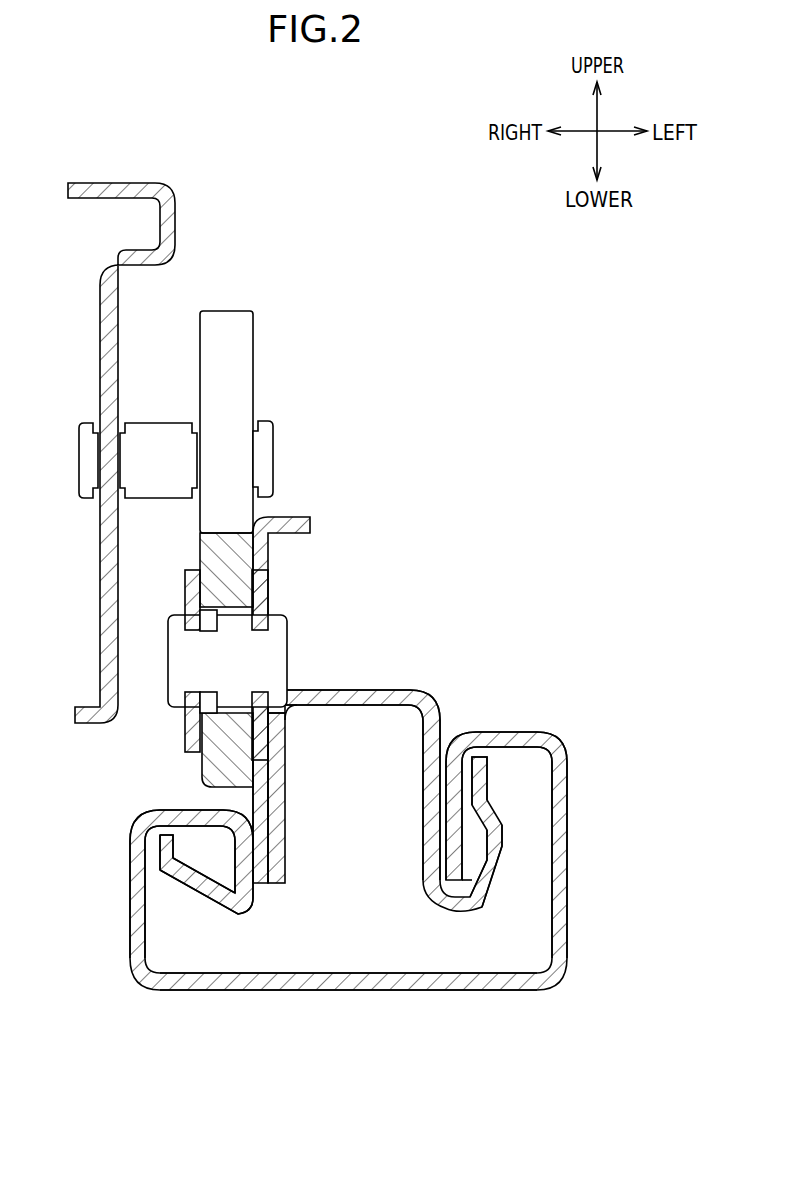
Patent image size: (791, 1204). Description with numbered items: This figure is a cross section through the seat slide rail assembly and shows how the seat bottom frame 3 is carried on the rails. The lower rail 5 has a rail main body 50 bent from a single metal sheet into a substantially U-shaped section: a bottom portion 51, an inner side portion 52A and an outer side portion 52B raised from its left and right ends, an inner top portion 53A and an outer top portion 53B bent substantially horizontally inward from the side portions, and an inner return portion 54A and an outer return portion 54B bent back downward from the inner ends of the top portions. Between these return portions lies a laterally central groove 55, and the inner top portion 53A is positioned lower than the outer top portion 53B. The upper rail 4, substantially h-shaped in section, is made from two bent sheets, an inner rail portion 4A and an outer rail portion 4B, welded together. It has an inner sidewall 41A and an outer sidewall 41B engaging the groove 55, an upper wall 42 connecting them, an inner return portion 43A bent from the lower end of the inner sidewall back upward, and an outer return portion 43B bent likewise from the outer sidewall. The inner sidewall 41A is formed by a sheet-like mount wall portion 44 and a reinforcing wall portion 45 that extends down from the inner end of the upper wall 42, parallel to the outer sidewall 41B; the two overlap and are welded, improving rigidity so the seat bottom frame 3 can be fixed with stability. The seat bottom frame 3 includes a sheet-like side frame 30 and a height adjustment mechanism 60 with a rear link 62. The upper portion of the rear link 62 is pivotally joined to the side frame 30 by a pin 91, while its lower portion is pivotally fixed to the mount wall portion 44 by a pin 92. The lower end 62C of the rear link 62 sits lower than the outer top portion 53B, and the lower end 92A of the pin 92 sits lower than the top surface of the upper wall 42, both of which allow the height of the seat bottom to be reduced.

The seat bottom frame 3 is at (258, 219).
The side frame 30 is at (188, 207).
The height adjustment mechanism 60 is at (287, 549).
The rear link 62 is at (261, 329).
The lower end 62C is at (238, 787).
The upper rail 4 is at (391, 663).
The inner rail portion 4A is at (321, 490).
The mount wall portion 44 is at (262, 572).
The inner sidewall 41A is at (241, 807).
The reinforcing wall portion 45 is at (278, 835).
The outer rail portion 4B is at (432, 676).
The upper wall 42 is at (349, 689).
The outer sidewall 41B is at (432, 842).
The pin 91 is at (286, 430).
The pin 92 is at (299, 625).
The lower end 92A is at (283, 712).
The lower rail 5 is at (366, 862).
The rail main body 50 is at (588, 719).
The bottom portion 51 is at (367, 985).
The inner side portion 52A is at (137, 920).
The outer side portion 52B is at (560, 873).
The inner top portion 53A is at (168, 810).
The outer top portion 53B is at (515, 732).
The inner return portion 54A is at (185, 868).
The outer return portion 54B is at (455, 800).
The inner return portion 43A is at (197, 893).
The outer return portion 43B is at (493, 858).
The groove 55 is at (381, 805).